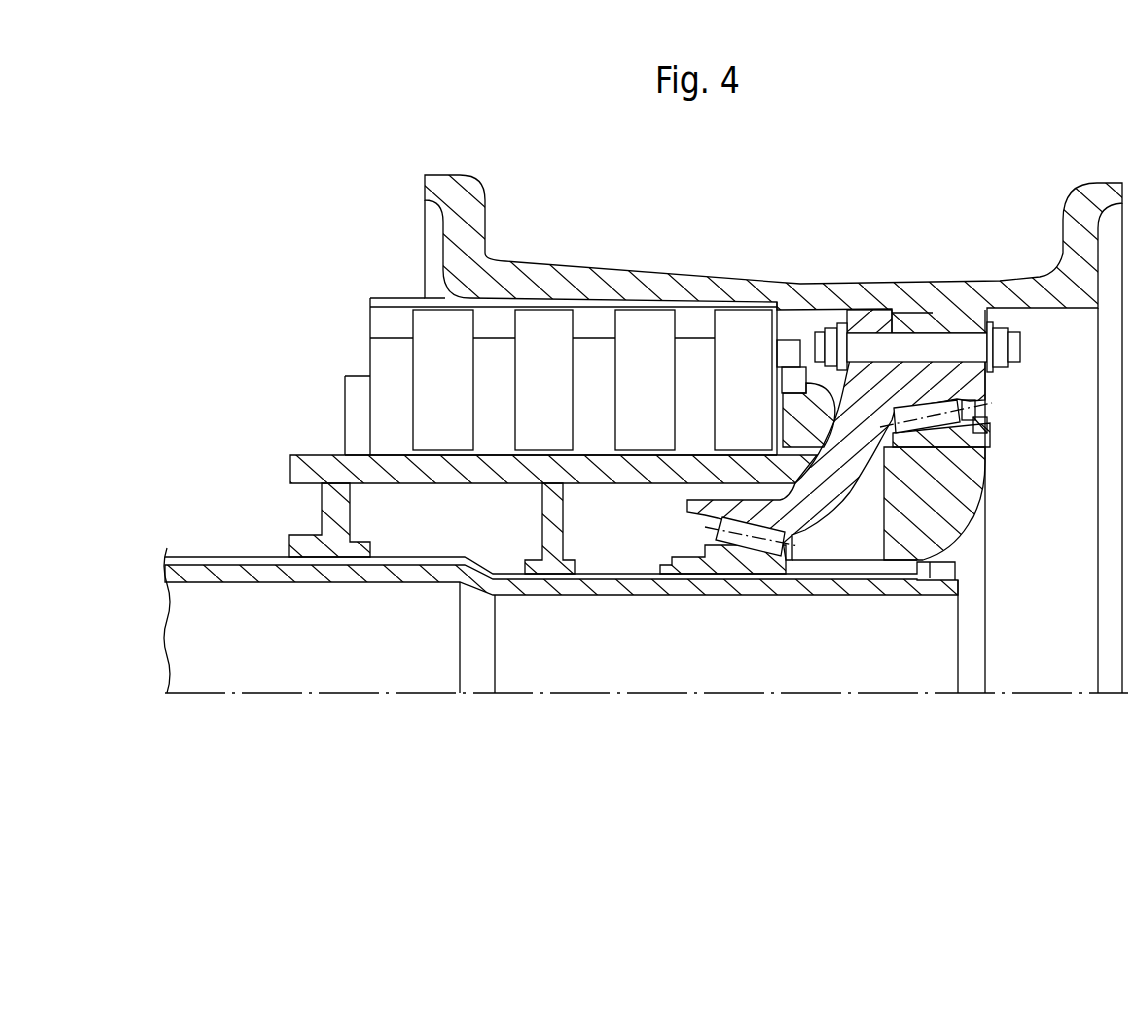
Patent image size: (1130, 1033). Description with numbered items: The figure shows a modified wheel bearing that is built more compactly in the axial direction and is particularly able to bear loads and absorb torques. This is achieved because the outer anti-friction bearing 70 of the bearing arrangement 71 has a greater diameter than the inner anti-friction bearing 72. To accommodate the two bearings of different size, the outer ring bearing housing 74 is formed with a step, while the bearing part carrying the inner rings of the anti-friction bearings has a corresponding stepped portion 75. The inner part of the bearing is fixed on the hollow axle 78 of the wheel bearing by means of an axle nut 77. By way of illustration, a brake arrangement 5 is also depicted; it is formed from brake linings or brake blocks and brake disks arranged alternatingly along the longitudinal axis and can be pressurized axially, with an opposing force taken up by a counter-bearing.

The brake arrangement 5 is at (327, 330).
The outer anti-friction bearing 70 is at (962, 412).
The bearing arrangement 71 is at (853, 279).
The inner anti-friction bearing 72 is at (755, 548).
The outer ring bearing housing 74 is at (870, 364).
The stepped portion 75 is at (988, 436).
The axle nut 77 is at (935, 564).
The hollow axle 78 is at (357, 608).